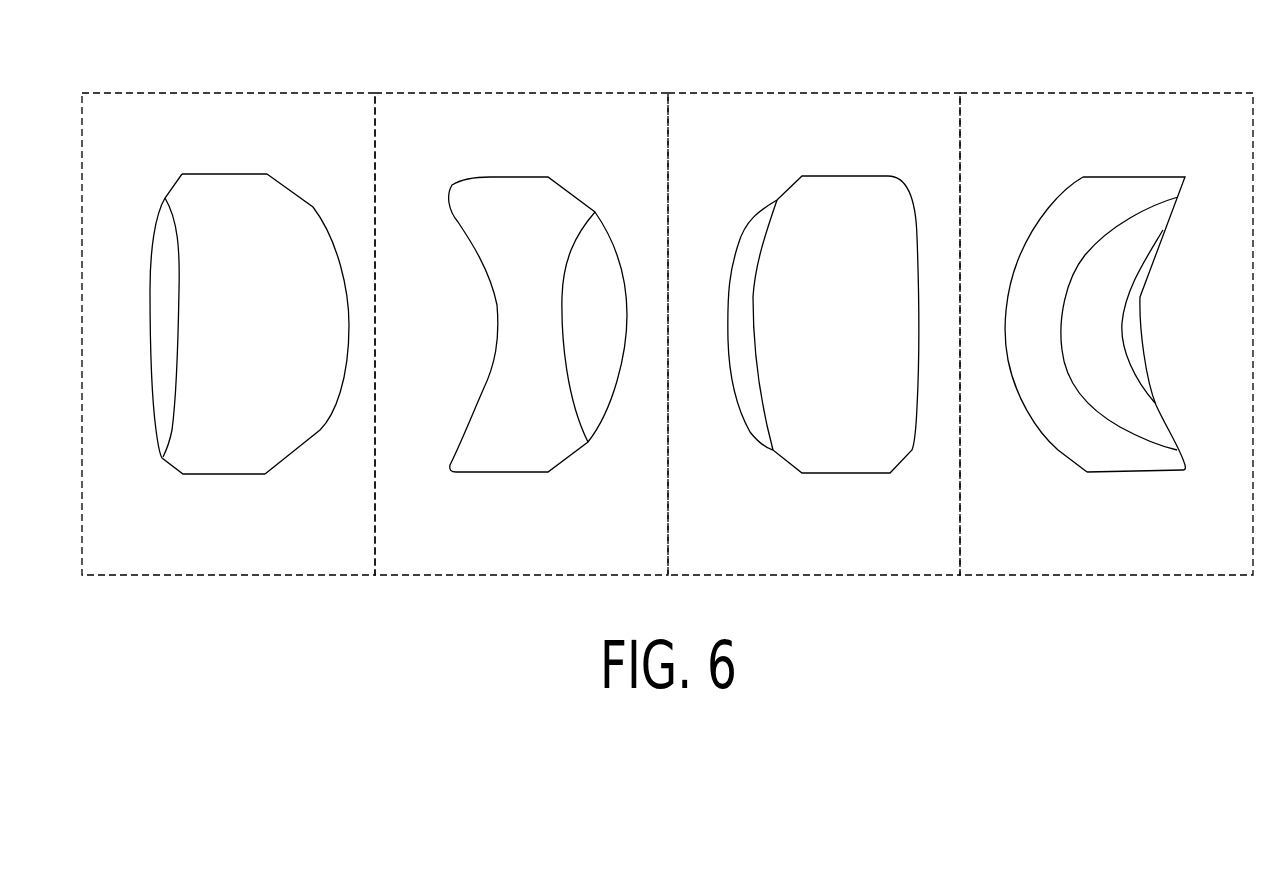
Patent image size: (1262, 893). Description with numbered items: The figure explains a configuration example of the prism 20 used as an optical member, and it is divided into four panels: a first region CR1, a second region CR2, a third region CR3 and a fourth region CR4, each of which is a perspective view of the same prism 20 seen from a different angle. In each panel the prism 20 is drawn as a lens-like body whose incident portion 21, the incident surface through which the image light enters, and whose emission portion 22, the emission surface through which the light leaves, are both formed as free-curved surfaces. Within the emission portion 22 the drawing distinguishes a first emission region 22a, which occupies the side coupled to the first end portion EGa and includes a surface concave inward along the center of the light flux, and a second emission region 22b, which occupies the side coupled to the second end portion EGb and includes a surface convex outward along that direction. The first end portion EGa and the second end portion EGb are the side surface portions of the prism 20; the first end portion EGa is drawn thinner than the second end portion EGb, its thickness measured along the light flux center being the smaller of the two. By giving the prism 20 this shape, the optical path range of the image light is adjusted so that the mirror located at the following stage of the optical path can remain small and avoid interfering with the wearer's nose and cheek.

The prism 20 is at (195, 152).
The incident portion 21 is at (515, 437).
The emission portion 22 is at (233, 433).
The first emission region 22a is at (308, 340).
The second emission region 22b is at (223, 355).
The first end portion EGa is at (750, 268).
The second end portion EGb is at (165, 422).
The first region CR1 is at (228, 92).
The second region CR2 is at (510, 92).
The third region CR3 is at (816, 92).
The fourth region CR4 is at (1110, 92).